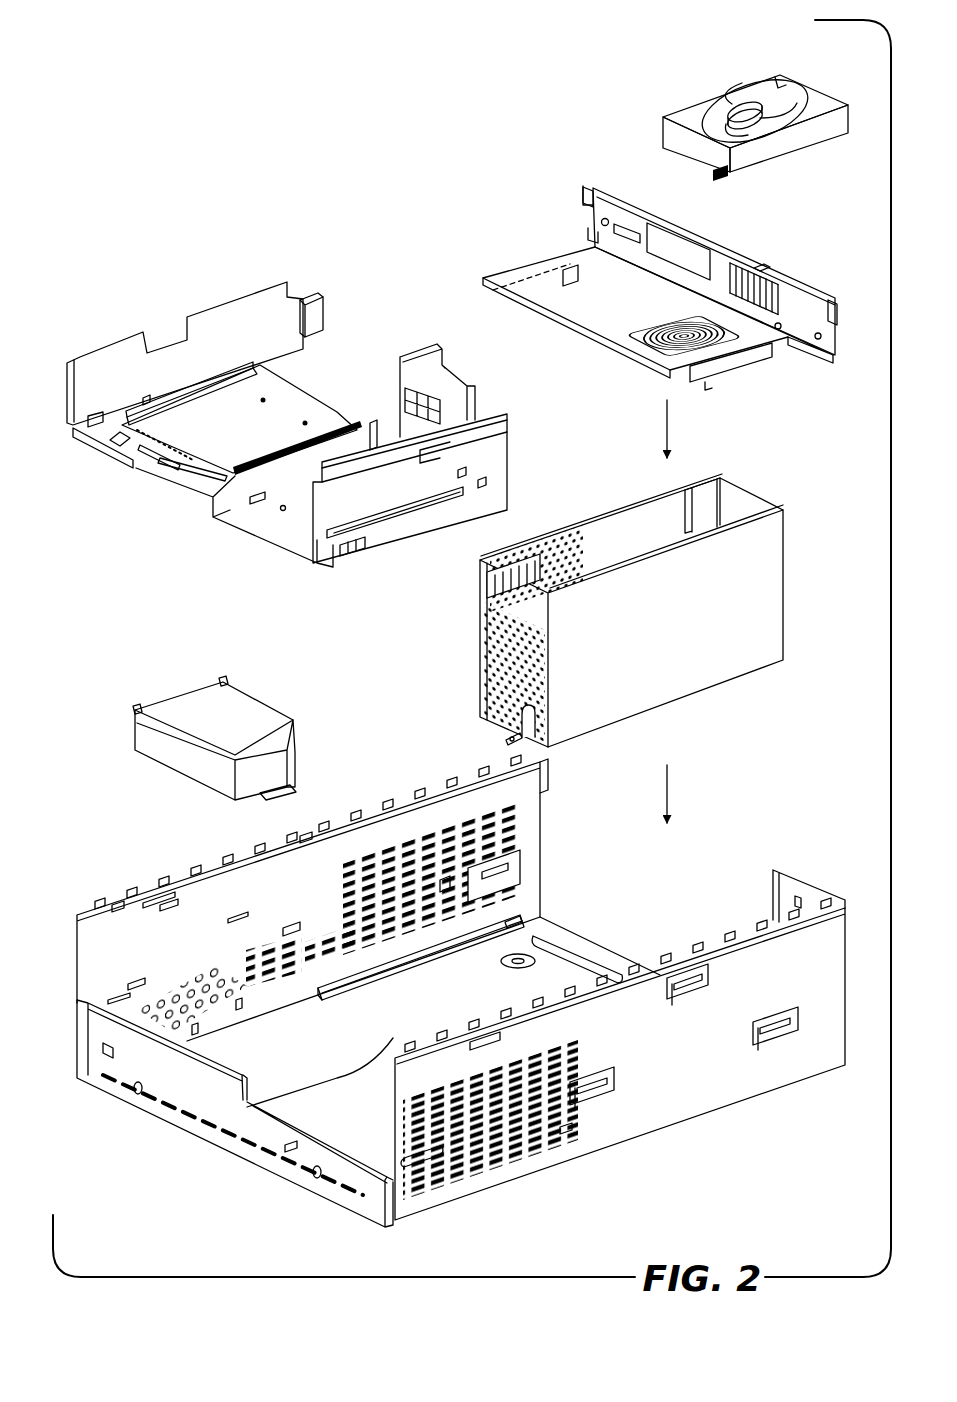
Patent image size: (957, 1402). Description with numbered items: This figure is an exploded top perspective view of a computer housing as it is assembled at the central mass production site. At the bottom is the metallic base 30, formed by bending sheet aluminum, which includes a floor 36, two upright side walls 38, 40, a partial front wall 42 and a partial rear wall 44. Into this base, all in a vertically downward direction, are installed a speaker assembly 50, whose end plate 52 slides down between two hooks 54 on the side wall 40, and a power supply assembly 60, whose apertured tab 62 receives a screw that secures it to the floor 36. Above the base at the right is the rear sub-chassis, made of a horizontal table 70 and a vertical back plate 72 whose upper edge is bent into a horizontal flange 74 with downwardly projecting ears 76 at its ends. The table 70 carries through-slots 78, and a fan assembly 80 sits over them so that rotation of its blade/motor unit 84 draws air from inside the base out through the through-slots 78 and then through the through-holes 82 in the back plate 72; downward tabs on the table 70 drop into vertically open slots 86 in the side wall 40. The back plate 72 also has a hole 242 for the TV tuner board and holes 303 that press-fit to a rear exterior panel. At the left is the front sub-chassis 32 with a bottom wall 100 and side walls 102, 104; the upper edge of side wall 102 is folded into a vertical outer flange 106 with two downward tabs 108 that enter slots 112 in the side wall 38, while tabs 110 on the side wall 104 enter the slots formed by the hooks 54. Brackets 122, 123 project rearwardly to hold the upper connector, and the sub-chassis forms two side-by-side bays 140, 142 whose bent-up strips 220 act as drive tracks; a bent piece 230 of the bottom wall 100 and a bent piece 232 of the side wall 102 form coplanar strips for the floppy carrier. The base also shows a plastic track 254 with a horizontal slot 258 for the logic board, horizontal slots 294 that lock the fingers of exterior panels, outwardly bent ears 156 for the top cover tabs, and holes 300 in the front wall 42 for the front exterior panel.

The metallic base 30 is at (680, 1122).
The front sub-chassis 32 is at (138, 328).
The floor 36 is at (280, 1051).
The side wall 38 is at (822, 1056).
The side wall 40 is at (546, 790).
The partial front wall 42 is at (207, 1104).
The partial rear wall 44 is at (790, 876).
The speaker assembly 50 is at (306, 745).
The end plate 52 is at (224, 684).
The hooks 54 is at (302, 925).
The power supply assembly 60 is at (698, 700).
The apertured tab 62 is at (506, 740).
The horizontal table 70 is at (617, 328).
The vertical back plate 72 is at (810, 325).
The horizontal flange 74 is at (800, 285).
The ears 76 is at (582, 186).
The through-slots 78 is at (717, 346).
The fan assembly 80 is at (692, 97).
The through-holes 82 is at (768, 272).
The blade/motor unit 84 is at (788, 98).
The vertically open slots 86 is at (508, 855).
The bottom wall 100 is at (203, 433).
The side wall 102 is at (495, 465).
The side wall 104 is at (266, 298).
The vertical outer flange 106 is at (510, 426).
The tabs 108 is at (470, 472).
The tabs 110 is at (143, 402).
The vertically open slots 112 is at (520, 1114).
The bracket 122 is at (336, 320).
The bracket 123 is at (463, 368).
The bay 140 is at (112, 460).
The bay 142 is at (282, 545).
The outwardly bent ears 156 is at (302, 838).
The bent-up strips 220 is at (158, 478).
The bent piece of bottom wall 230 is at (373, 422).
The bent piece of side wall 232 is at (488, 488).
The hole 242 is at (677, 248).
The track 254 is at (520, 912).
The horizontal slot 258 is at (466, 960).
The horizontal slots 294 is at (170, 905).
The holes 300 is at (133, 1092).
The holes 303 is at (590, 232).